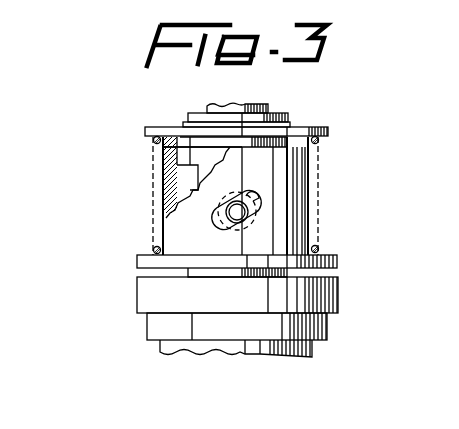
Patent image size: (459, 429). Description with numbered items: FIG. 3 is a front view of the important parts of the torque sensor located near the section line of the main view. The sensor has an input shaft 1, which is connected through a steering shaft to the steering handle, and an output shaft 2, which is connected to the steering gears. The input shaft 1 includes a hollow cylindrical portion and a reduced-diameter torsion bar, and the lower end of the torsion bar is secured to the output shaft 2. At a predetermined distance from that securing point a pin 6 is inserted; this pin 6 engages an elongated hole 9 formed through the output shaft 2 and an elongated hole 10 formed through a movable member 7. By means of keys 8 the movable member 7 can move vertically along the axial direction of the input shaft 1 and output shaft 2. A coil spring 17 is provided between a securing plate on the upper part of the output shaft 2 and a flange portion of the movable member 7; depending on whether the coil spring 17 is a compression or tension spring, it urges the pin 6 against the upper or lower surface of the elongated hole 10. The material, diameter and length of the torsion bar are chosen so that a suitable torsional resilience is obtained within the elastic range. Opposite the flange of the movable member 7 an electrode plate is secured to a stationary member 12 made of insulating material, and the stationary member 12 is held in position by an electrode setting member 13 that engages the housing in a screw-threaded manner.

The input shaft 1 is at (268, 107).
The output shaft 2 is at (202, 147).
The pin 6 is at (218, 218).
The movable member 7 is at (175, 165).
The keys 8 is at (180, 188).
The elongated hole 9 is at (256, 209).
The elongated hole 10 is at (256, 199).
The stationary member 12 is at (338, 300).
The electrode setting member 13 is at (328, 331).
The coil spring 17 is at (318, 140).